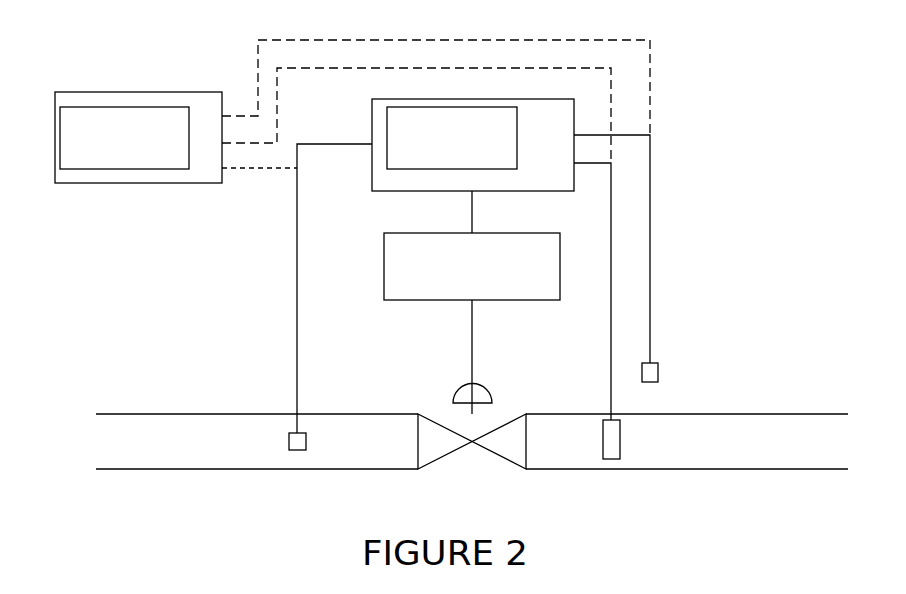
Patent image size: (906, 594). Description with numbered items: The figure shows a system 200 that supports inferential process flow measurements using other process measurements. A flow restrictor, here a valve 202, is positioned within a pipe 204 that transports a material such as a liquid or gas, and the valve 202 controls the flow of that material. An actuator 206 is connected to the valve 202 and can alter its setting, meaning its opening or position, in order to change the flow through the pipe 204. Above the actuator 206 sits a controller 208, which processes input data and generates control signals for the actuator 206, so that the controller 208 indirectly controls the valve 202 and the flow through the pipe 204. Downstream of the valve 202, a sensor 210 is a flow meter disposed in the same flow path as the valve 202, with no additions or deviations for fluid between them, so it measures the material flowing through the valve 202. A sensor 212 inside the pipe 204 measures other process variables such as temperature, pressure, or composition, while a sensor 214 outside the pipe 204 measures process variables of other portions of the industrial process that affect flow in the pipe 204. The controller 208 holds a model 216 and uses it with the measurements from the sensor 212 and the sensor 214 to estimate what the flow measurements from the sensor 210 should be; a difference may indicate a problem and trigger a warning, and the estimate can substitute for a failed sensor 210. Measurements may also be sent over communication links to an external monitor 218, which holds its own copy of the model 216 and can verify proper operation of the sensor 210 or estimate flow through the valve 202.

The system 200 is at (724, 72).
The valve 202 is at (445, 461).
The pipe 204 is at (259, 471).
The actuator 206 is at (550, 296).
The controller 208 is at (560, 188).
The sensor 210 is at (615, 462).
The sensor 212 is at (293, 430).
The sensor 214 is at (657, 360).
The model 216 is at (146, 165).
The external monitor 218 is at (151, 187).